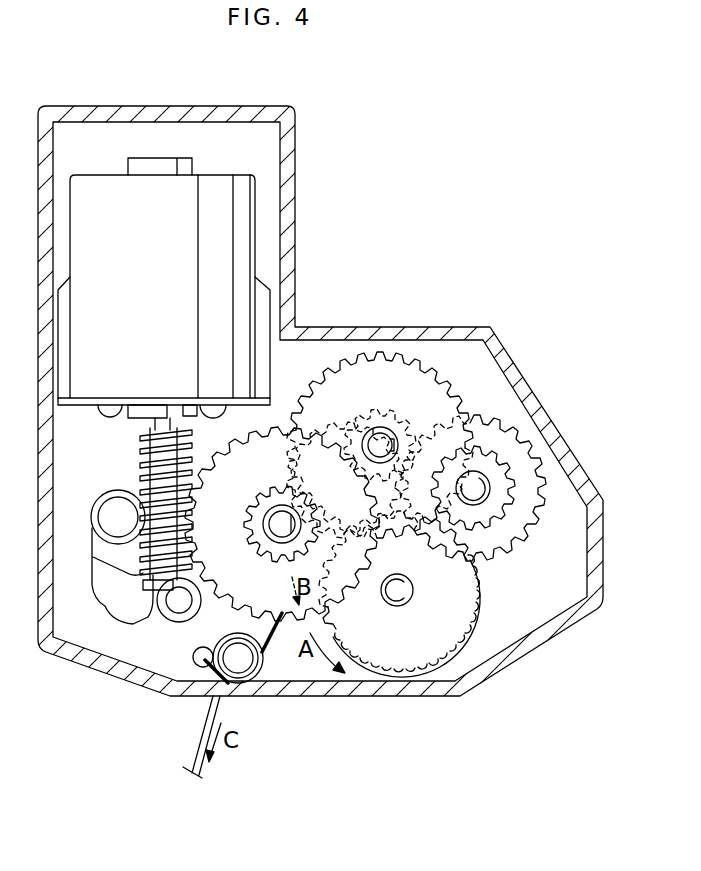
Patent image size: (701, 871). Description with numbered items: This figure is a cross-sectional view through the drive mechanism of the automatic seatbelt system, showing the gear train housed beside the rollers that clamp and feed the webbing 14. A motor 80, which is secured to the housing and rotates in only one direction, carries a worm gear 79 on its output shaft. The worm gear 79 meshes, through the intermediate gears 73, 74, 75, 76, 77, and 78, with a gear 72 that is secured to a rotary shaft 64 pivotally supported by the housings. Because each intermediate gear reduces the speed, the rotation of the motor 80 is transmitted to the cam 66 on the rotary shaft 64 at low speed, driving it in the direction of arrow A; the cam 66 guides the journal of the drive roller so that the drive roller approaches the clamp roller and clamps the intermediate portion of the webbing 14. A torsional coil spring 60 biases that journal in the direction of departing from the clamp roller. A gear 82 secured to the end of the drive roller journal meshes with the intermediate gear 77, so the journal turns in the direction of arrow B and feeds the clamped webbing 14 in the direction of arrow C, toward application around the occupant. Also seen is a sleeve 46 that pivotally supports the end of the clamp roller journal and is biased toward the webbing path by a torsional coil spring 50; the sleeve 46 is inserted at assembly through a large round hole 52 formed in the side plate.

The webbing 14 is at (193, 742).
The sleeve 46 is at (189, 618).
The torsional coil spring 50 is at (100, 496).
The round hole 52 is at (132, 622).
The torsional coil spring 60 is at (277, 652).
The rotary shaft 64 is at (403, 592).
The cam 66 is at (475, 610).
The gear 72 is at (463, 578).
The intermediate gear 73 is at (505, 481).
The intermediate gear 74 is at (548, 500).
The intermediate gear 75 is at (368, 413).
The intermediate gear 76 is at (432, 382).
The intermediate gear 77 is at (262, 504).
The intermediate gear 78 is at (345, 467).
The worm gear 79 is at (192, 449).
The motor 80 is at (225, 247).
The gear 82 is at (275, 586).